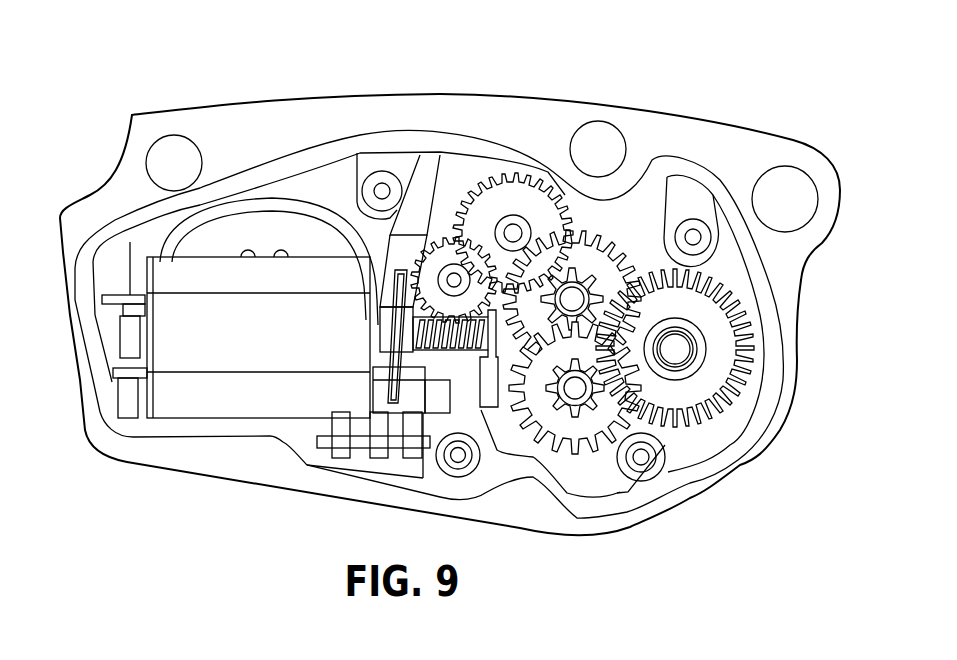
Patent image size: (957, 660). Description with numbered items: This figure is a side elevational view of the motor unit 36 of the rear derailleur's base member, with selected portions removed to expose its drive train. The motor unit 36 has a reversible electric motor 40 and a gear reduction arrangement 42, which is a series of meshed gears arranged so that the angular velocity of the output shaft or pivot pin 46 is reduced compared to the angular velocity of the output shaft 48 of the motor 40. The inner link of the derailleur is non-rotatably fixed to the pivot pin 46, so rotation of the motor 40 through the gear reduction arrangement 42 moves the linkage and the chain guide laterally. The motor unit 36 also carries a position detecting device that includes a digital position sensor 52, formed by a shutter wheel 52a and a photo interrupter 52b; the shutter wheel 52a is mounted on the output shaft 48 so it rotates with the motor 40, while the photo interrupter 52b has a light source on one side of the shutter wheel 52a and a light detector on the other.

The motor unit 36 is at (555, 58).
The gear reduction arrangement 42 is at (658, 195).
The reversible electric motor 40 is at (170, 335).
The digital position sensor 52 is at (367, 257).
The shutter wheel 52a is at (390, 382).
The photo interrupter 52b is at (380, 398).
The pivot pin 46 is at (675, 350).
The output shaft of the motor 48 is at (450, 357).